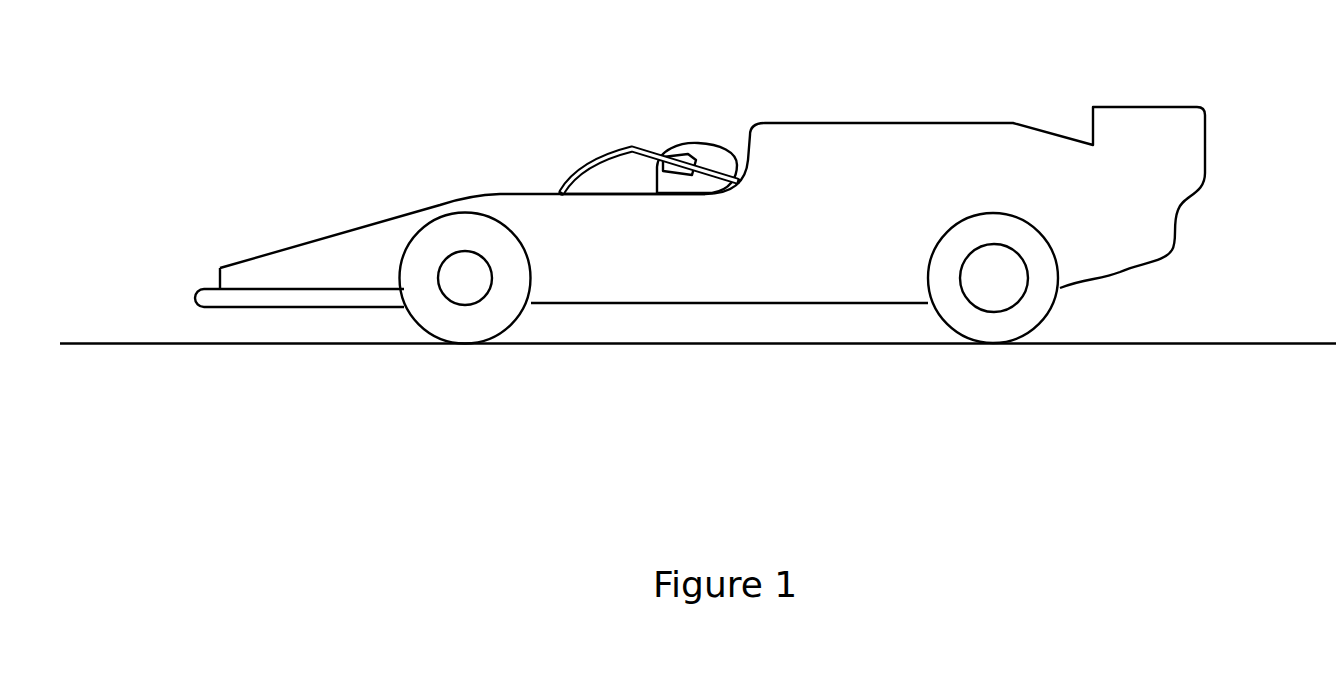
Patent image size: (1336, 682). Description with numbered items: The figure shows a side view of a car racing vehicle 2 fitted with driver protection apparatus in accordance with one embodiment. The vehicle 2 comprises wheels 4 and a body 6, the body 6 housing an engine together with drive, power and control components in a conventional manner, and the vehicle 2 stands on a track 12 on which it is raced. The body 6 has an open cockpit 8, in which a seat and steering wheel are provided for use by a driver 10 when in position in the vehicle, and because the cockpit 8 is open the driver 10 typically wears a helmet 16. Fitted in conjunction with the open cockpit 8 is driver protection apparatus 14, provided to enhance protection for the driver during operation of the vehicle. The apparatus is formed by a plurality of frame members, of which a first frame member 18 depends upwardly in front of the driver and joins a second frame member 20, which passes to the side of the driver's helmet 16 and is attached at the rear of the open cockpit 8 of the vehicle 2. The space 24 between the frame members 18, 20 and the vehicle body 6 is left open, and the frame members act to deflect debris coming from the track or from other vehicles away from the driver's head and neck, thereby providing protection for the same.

The car racing vehicle 2 is at (925, 138).
The wheels 4 is at (462, 332).
The body 6 is at (760, 275).
The open cockpit 8 is at (742, 155).
The driver 10 is at (707, 153).
The track 12 is at (1145, 344).
The driver protection apparatus 14 is at (627, 148).
The helmet 16 is at (687, 185).
The first frame member 18 is at (583, 167).
The second frame member 20 is at (660, 148).
The space 24 is at (627, 175).